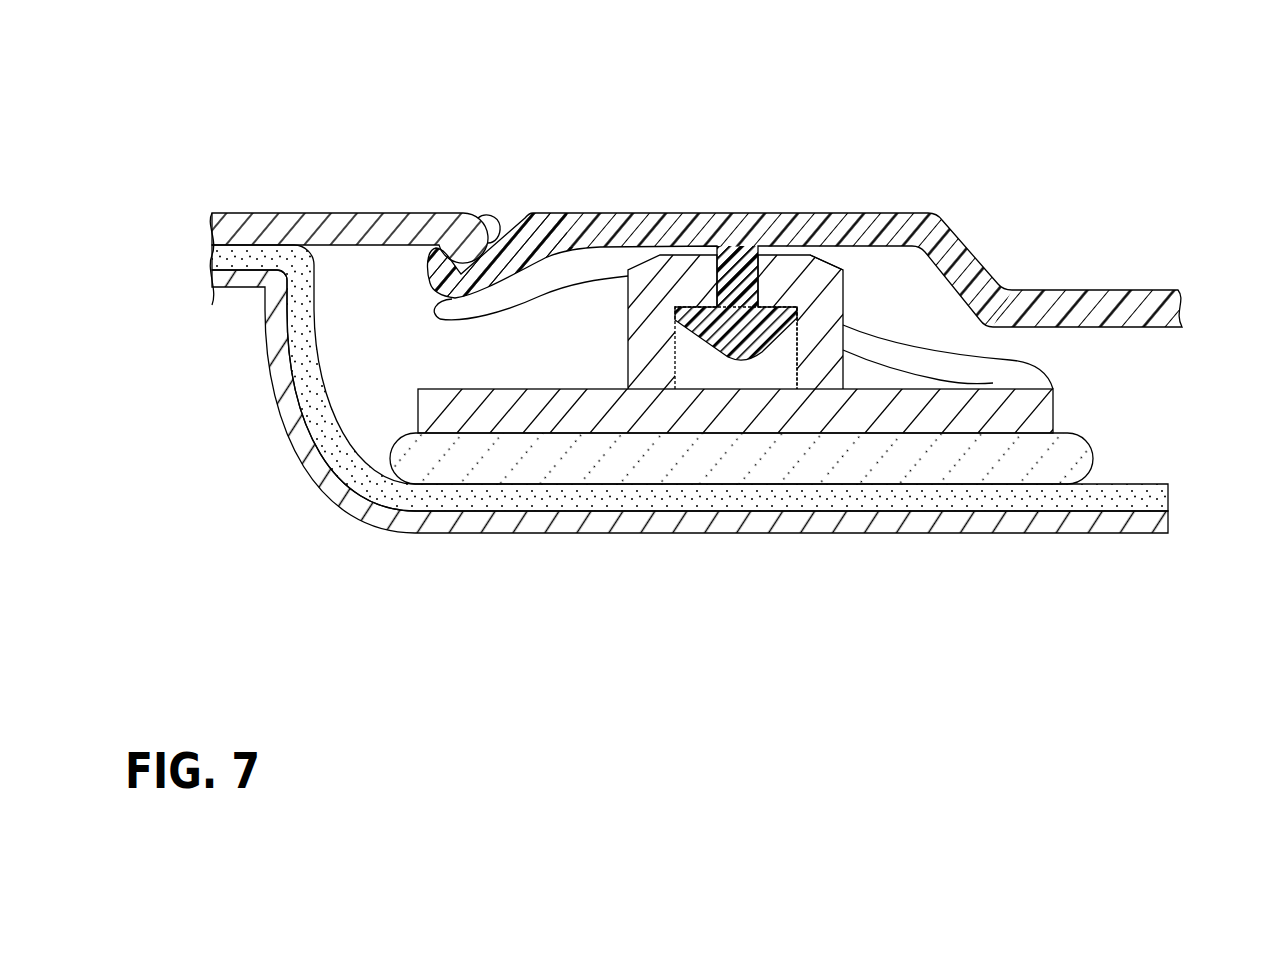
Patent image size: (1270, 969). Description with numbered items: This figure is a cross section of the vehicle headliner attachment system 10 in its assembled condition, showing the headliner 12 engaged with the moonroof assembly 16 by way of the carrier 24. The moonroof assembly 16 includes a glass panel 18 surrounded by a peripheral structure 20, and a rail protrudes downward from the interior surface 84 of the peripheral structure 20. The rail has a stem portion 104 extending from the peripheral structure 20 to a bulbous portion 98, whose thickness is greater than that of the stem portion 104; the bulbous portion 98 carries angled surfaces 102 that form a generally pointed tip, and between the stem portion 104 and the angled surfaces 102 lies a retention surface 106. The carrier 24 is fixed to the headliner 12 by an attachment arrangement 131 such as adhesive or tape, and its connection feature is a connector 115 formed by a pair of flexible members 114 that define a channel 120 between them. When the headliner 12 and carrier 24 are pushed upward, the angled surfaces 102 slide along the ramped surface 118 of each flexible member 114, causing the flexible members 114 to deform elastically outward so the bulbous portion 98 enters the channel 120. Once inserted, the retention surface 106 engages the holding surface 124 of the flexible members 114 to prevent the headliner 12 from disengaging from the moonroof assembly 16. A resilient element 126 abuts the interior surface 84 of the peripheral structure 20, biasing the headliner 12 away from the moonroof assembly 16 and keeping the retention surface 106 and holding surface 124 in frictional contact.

The vehicle headliner attachment system 10 is at (246, 132).
The headliner 12 is at (460, 546).
The moonroof assembly 16 is at (1054, 282).
The glass panel 18 is at (366, 200).
The peripheral structure 20 is at (880, 201).
The carrier 24 is at (1075, 399).
The interior surface 84 is at (563, 262).
The bulbous portion 98 is at (718, 334).
The angled surfaces 102 is at (748, 322).
The stem portion 104 is at (748, 212).
The retention surface 106 is at (715, 305).
The flexible members 114 is at (640, 345).
The connector 115 is at (854, 295).
The ramped surface 118 is at (749, 194).
The channel 120 is at (792, 366).
The holding surface 124 is at (784, 295).
The resilient element 126 is at (566, 262).
The attachment arrangement 131 is at (1058, 458).